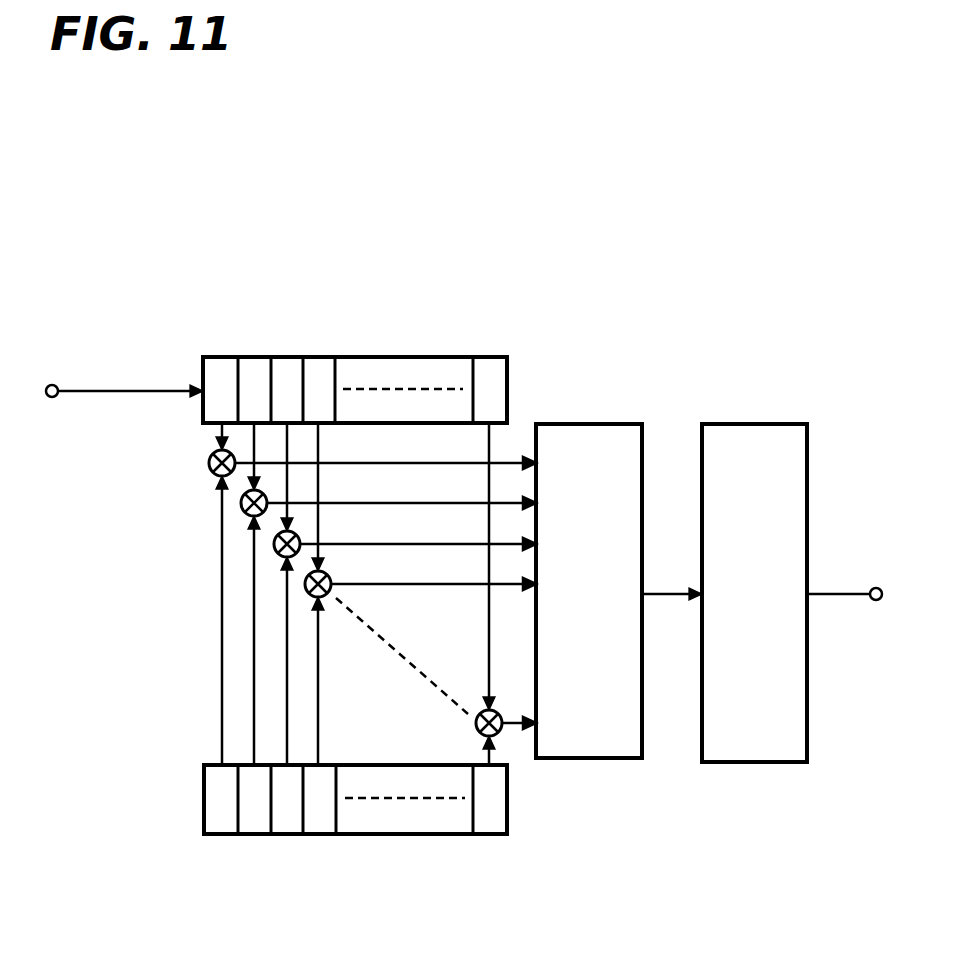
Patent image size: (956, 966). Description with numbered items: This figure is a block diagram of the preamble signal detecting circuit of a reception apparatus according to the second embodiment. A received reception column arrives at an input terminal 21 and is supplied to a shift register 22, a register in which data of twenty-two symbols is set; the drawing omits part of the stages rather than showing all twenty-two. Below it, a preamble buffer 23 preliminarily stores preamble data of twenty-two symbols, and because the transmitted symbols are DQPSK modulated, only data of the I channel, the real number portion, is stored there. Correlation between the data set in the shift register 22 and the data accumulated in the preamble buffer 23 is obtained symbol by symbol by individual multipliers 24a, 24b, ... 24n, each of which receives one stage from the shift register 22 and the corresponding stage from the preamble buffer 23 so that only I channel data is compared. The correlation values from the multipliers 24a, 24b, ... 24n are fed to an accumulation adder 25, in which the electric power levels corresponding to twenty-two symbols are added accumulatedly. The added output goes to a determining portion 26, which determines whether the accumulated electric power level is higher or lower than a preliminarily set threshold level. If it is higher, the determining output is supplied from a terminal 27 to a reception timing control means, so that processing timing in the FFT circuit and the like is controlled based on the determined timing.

The input terminal 21 is at (52, 385).
The shift register 22 is at (491, 357).
The preamble buffer 23 is at (507, 812).
The multiplier 24a is at (211, 472).
The multiplier 24b is at (242, 512).
The multiplier 24n is at (497, 733).
The accumulation adder 25 is at (589, 424).
The determining portion 26 is at (757, 424).
The terminal 27 is at (876, 588).